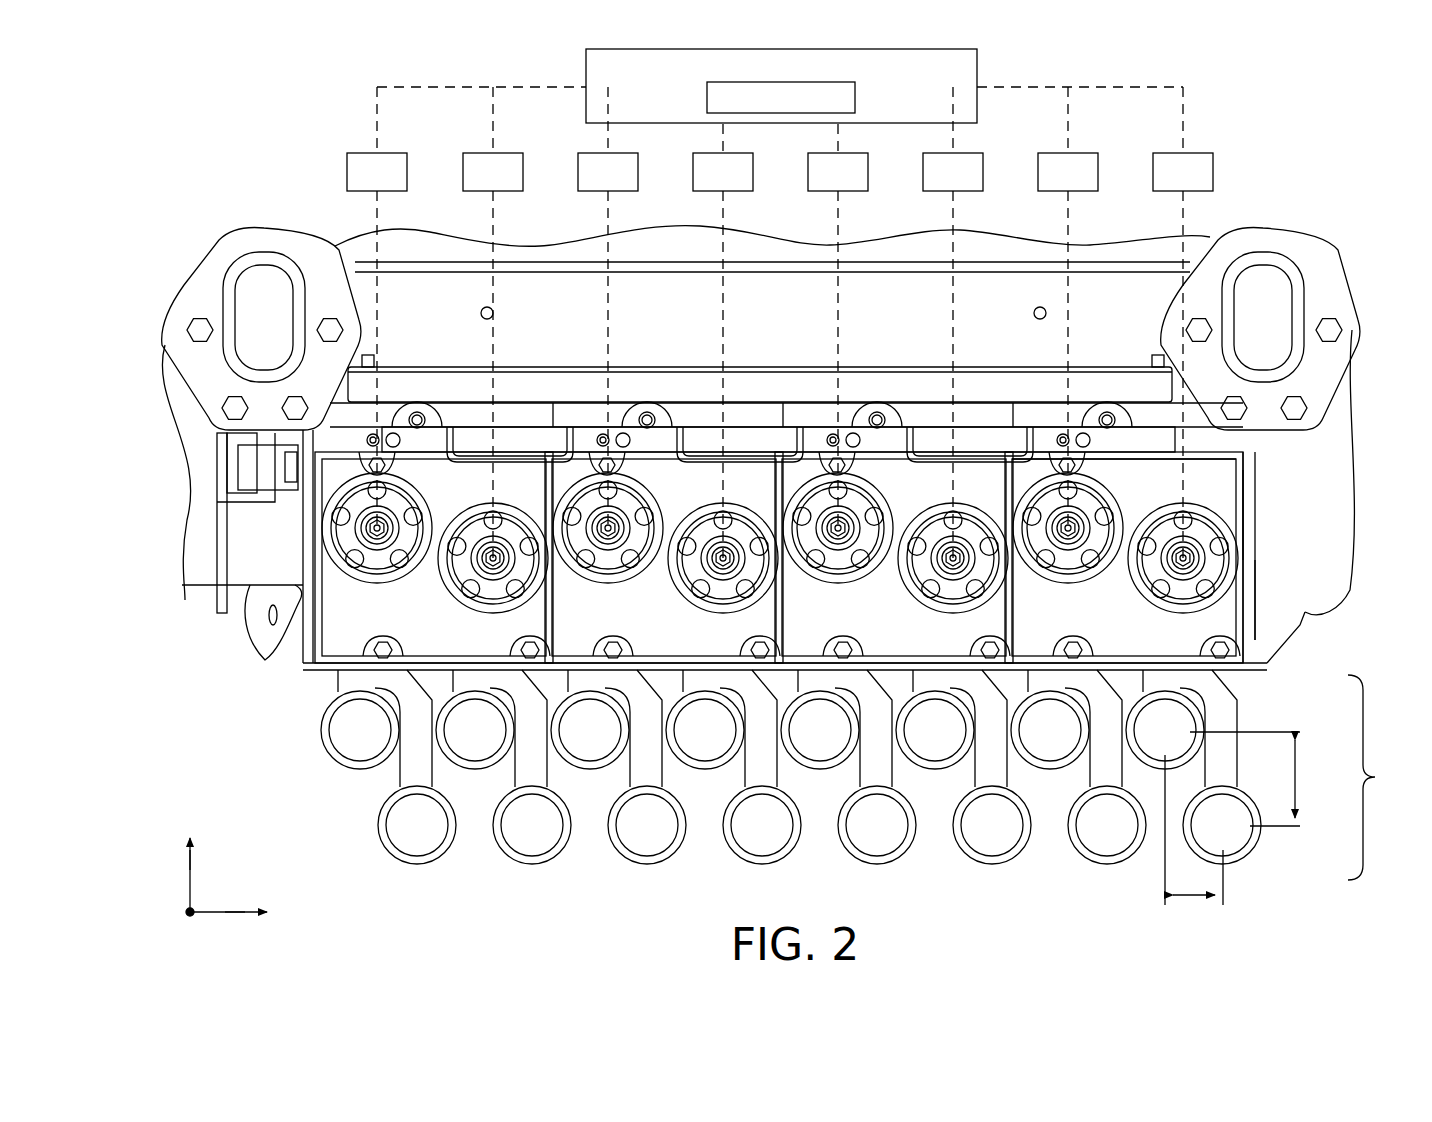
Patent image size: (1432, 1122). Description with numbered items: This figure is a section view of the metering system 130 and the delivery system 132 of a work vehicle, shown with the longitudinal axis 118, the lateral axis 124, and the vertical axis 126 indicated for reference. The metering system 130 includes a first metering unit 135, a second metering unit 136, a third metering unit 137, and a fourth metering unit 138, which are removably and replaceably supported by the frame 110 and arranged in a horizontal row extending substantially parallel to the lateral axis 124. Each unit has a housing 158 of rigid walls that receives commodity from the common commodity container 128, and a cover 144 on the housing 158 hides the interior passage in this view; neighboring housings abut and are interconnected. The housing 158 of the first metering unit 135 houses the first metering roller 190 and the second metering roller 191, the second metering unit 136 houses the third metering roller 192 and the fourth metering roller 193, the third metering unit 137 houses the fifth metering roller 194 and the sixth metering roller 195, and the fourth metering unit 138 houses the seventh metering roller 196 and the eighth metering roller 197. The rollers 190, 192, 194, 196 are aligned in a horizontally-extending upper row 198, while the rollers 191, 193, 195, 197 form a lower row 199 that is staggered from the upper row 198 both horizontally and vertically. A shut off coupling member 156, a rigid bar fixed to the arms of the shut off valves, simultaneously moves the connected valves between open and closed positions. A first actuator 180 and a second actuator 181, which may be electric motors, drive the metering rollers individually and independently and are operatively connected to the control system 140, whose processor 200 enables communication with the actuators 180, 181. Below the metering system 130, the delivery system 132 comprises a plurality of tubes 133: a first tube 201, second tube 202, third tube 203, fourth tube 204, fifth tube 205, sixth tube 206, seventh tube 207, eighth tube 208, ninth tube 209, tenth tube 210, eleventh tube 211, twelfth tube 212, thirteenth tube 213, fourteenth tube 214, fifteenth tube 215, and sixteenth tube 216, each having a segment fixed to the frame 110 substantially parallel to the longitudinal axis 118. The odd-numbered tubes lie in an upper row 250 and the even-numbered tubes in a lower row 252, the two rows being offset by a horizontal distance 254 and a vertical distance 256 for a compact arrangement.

The frame 110 is at (1318, 285).
The longitudinal axis 118 is at (190, 912).
The lateral axis 124 is at (222, 915).
The vertical axis 126 is at (190, 880).
The commodity container 128 is at (358, 268).
The metering system 130 is at (345, 473).
The delivery system 132 is at (245, 760).
The plurality of tubes 133 is at (1385, 777).
The first metering unit 135 is at (1222, 492).
The second metering unit 136 is at (893, 478).
The third metering unit 137 is at (665, 488).
The fourth metering unit 138 is at (442, 490).
The control system 140 is at (586, 70).
The cover 144 is at (1077, 617).
The shut off coupling member 156 is at (790, 444).
The housing 158 is at (1250, 526).
The first actuator 180 is at (347, 172).
The second actuator 181 is at (463, 172).
The first metering roller 190 is at (1072, 557).
The second metering roller 191 is at (1152, 572).
The third metering roller 192 is at (838, 555).
The fourth metering roller 193 is at (923, 572).
The fifth metering roller 194 is at (608, 555).
The sixth metering roller 195 is at (693, 572).
The seventh metering roller 196 is at (378, 555).
The eighth metering roller 197 is at (463, 572).
The upper row 198 is at (292, 527).
The lower row 199 is at (1252, 574).
The processor 200 is at (855, 97).
The first tube 201 is at (1143, 745).
The second tube 202 is at (1200, 840).
The third tube 203 is at (1028, 745).
The fourth tube 204 is at (1085, 840).
The fifth tube 205 is at (913, 745).
The sixth tube 206 is at (970, 840).
The seventh tube 207 is at (798, 745).
The eighth tube 208 is at (855, 840).
The ninth tube 209 is at (683, 745).
The tenth tube 210 is at (740, 840).
The eleventh tube 211 is at (568, 745).
The twelfth tube 212 is at (625, 840).
The thirteenth tube 213 is at (453, 745).
The fourteenth tube 214 is at (510, 840).
The fifteenth tube 215 is at (338, 745).
The sixteenth tube 216 is at (395, 840).
The upper row 250 is at (312, 716).
The lower row 252 is at (363, 823).
The horizontal distance 254 is at (1193, 896).
The vertical distance 256 is at (1296, 779).